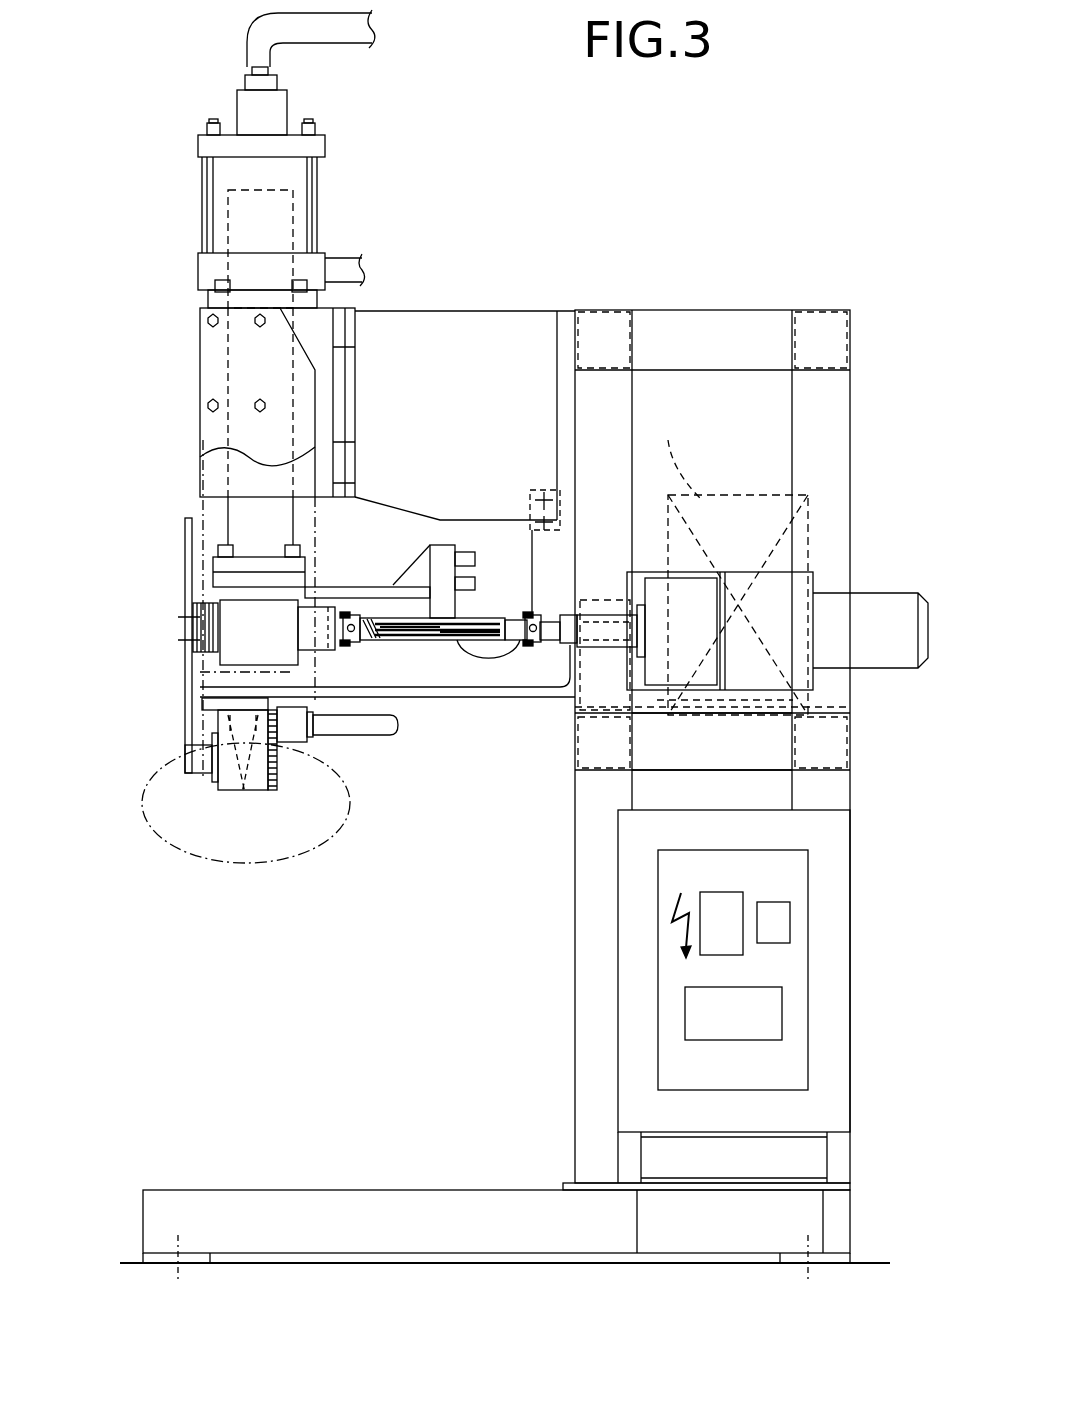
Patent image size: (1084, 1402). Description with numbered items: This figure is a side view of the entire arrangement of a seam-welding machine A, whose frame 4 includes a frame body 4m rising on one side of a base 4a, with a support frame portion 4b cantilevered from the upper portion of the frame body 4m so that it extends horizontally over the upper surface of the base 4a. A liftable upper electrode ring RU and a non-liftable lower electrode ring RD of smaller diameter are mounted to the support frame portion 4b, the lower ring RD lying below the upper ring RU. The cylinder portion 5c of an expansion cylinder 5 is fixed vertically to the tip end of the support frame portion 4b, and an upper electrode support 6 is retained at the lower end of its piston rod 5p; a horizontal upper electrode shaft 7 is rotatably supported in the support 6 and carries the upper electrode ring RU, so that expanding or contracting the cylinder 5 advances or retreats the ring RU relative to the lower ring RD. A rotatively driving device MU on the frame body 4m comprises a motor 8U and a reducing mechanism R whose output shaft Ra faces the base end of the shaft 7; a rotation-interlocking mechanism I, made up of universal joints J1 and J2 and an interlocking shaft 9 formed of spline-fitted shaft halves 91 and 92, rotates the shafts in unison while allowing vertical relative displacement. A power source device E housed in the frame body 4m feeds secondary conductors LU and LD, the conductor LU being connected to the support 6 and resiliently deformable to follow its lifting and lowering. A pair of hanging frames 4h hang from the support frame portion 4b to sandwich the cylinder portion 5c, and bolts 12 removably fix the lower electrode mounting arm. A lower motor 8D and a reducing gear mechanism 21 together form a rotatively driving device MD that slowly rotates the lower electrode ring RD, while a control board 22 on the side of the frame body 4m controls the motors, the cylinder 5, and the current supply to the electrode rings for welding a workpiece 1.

The workpiece 1 is at (163, 850).
The frame 4 is at (852, 457).
The base 4a is at (372, 1240).
The support frame portion 4b is at (470, 325).
The hanging frames 4h is at (310, 398).
The frame body 4m is at (852, 895).
The expansion cylinder 5 is at (198, 210).
The cylinder portion 5c is at (300, 216).
The piston rod 5p is at (278, 515).
The upper electrode support 6 is at (275, 628).
The upper electrode shaft 7 is at (200, 605).
The motor 8U is at (880, 598).
The motor 8D is at (288, 790).
The interlocking shaft 9 is at (500, 750).
The shaft half 91 is at (403, 642).
The shaft half 92 is at (483, 648).
The bolts 12 is at (242, 782).
The reducing gear mechanism 21 is at (298, 775).
The control board 22 is at (795, 975).
The welding machine A is at (553, 268).
The power source device E is at (680, 451).
The rotation-interlocking mechanism I is at (481, 610).
The universal joint J1 is at (352, 645).
The universal joint J2 is at (520, 648).
The secondary conductor LU is at (440, 545).
The secondary conductor LD is at (560, 713).
The rotatively driving device MU is at (685, 575).
The rotatively driving device MD is at (320, 748).
The reducing mechanism R is at (688, 690).
The output shaft Ra is at (607, 615).
The upper electrode ring RU is at (185, 535).
The lower electrode ring RD is at (185, 750).